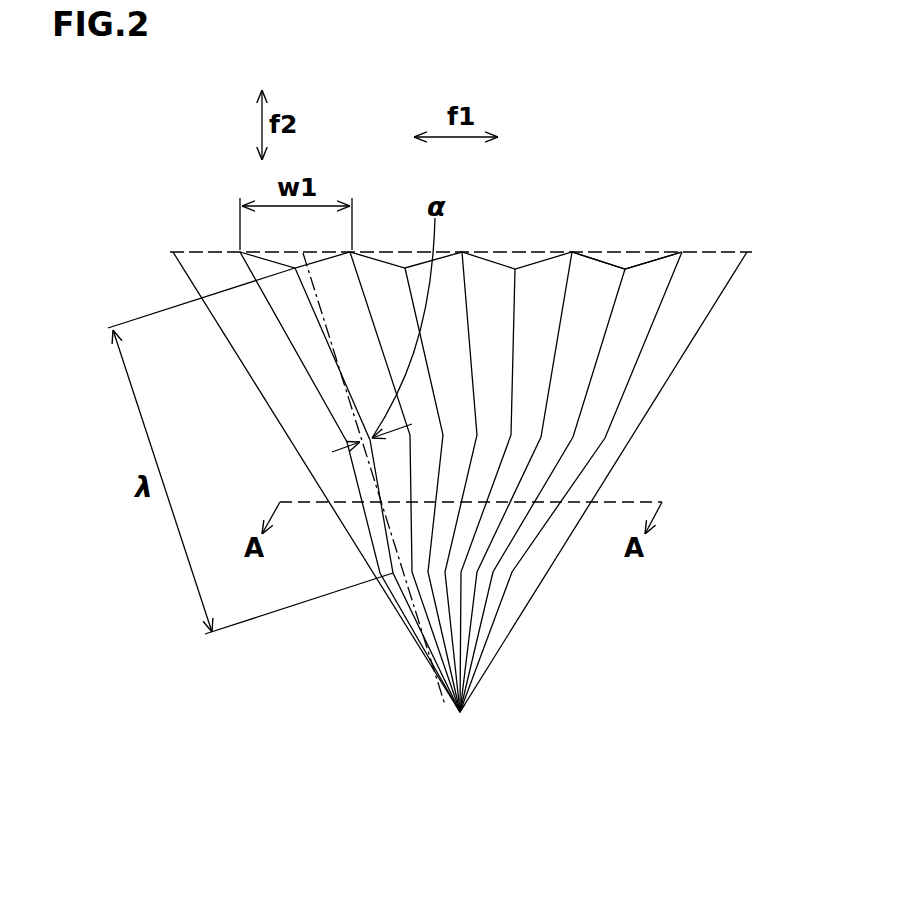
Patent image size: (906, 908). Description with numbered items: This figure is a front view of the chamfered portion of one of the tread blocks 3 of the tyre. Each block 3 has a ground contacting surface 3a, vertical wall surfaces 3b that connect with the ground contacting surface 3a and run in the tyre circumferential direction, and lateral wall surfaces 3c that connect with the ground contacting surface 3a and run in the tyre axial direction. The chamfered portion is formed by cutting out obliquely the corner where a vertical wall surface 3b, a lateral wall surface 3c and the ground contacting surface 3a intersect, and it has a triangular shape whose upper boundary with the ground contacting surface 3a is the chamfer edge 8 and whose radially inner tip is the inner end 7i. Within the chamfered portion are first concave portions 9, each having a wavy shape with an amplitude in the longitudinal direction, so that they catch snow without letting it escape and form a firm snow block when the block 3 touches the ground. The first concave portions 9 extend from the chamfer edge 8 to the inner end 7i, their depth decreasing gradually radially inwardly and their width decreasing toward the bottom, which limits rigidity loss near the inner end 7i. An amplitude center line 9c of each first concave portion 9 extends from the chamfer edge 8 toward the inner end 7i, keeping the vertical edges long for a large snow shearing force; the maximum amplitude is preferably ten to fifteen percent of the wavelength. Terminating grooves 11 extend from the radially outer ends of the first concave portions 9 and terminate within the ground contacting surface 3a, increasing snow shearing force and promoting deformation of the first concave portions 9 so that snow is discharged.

The block 3 is at (469, 465).
The ground contacting surface 3a is at (580, 229).
The vertical wall surface 3b is at (580, 647).
The lateral wall surface 3c is at (362, 647).
The inner end 7i is at (462, 713).
The chamfer edge 8 is at (716, 251).
The first concave portion 9 is at (608, 372).
The amplitude center line 9c is at (346, 393).
The terminating groove 11 is at (645, 257).